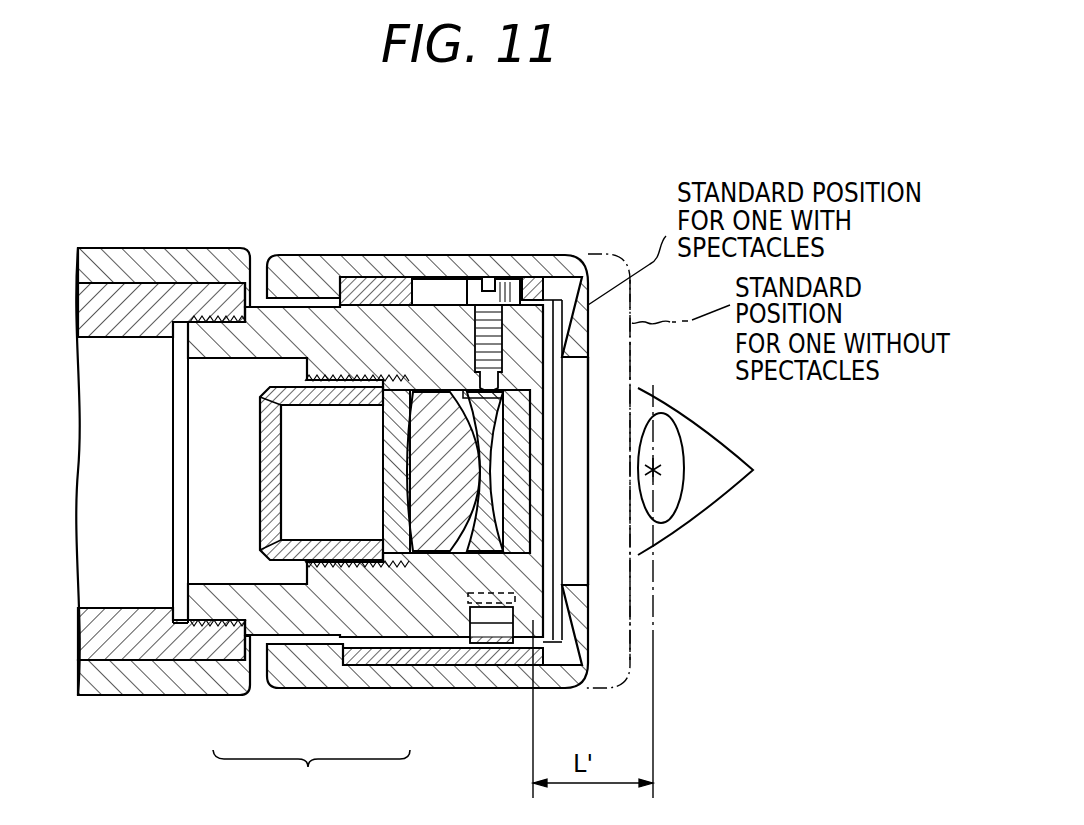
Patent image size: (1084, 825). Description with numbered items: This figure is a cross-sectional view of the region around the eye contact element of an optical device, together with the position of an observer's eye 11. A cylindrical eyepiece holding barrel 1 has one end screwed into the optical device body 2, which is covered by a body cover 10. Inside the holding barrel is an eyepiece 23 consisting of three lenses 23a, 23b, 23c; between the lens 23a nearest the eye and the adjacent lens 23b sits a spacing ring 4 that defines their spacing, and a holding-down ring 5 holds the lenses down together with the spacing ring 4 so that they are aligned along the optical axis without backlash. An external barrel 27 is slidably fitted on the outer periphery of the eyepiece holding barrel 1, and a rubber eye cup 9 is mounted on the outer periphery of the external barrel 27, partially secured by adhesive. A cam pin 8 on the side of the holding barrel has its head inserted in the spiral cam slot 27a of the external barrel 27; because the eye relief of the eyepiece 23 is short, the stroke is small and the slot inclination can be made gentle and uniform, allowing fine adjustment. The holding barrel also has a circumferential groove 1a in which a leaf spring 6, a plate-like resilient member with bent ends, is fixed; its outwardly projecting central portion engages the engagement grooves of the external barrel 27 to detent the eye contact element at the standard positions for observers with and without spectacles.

The body cover 10 is at (143, 250).
The optical device body 2 is at (188, 298).
The eyepiece holding barrel 1 is at (298, 318).
The holding-down ring 5 is at (335, 372).
The cam slot 27a is at (430, 287).
The spacing ring 4 is at (478, 390).
The cam pin 8 is at (497, 300).
The external barrel 27 is at (545, 288).
The eye cup 9 is at (580, 275).
The observer's eye 11 is at (677, 430).
The lens 23c is at (272, 688).
The lens 23b is at (393, 480).
The lens 23a is at (430, 515).
The circumferential groove 1a is at (478, 522).
The leaf spring 6 is at (518, 545).
The eyepiece 23 is at (311, 774).